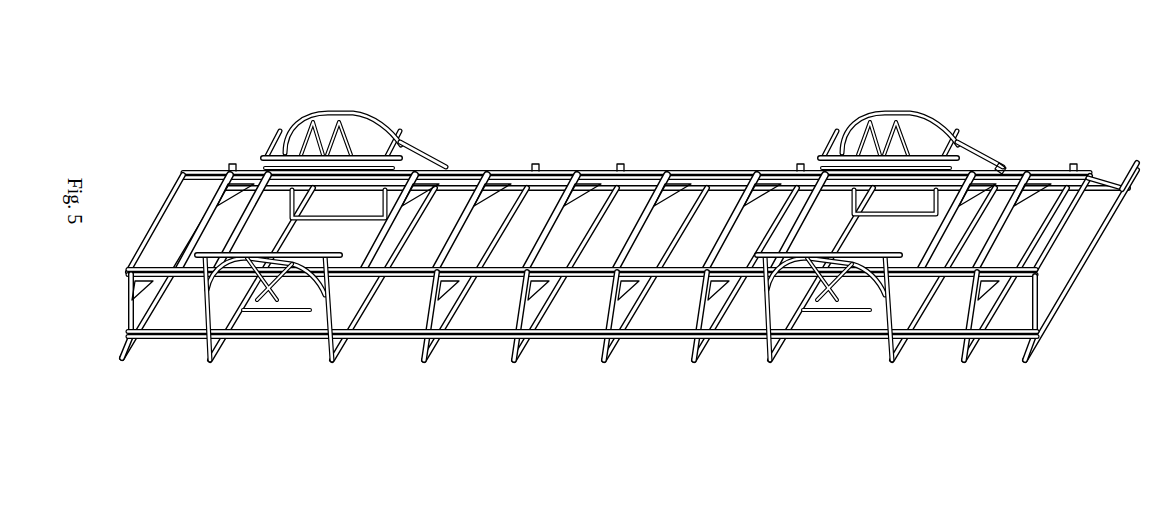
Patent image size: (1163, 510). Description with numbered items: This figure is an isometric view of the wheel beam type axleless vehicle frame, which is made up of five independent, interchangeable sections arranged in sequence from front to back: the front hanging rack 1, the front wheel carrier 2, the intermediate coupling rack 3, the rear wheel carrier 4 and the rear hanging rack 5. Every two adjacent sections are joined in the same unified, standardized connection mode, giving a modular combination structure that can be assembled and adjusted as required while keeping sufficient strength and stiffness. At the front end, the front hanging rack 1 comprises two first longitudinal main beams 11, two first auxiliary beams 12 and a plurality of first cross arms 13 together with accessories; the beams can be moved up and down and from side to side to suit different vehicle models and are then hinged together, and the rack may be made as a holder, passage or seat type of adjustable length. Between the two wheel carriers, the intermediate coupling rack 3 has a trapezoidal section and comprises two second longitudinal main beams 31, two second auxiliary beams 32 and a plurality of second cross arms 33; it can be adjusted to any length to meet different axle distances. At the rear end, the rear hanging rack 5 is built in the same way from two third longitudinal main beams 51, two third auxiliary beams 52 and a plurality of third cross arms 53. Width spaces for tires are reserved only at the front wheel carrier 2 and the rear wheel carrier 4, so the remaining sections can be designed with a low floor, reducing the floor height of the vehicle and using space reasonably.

The front hanging rack 1 is at (163, 205).
The first longitudinal main beams 11 is at (227, 175).
The first auxiliary beams 12 is at (258, 185).
The first cross arms 13 is at (190, 180).
The front wheel carrier 2 is at (327, 120).
The intermediate coupling rack 3 is at (597, 175).
The second longitudinal main beams 31 is at (500, 180).
The second auxiliary beams 32 is at (500, 335).
The cross member 33 is at (455, 205).
The rear wheel carrier 4 is at (895, 113).
The rear hanging rack 5 is at (1073, 172).
The third longitudinal main beams 51 is at (972, 155).
The third auxiliary beams 52 is at (995, 180).
The third cross arms 53 is at (1040, 180).